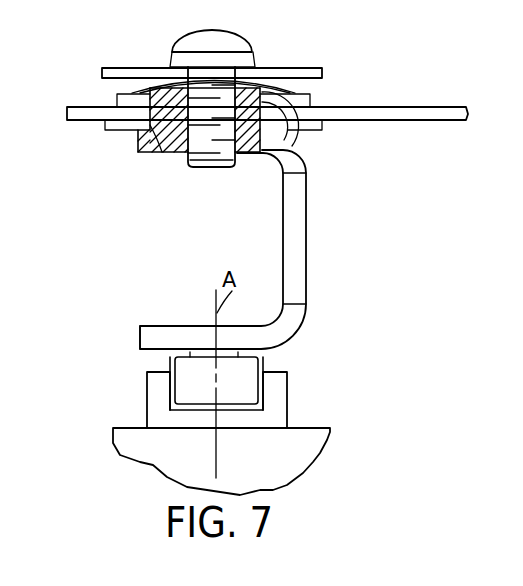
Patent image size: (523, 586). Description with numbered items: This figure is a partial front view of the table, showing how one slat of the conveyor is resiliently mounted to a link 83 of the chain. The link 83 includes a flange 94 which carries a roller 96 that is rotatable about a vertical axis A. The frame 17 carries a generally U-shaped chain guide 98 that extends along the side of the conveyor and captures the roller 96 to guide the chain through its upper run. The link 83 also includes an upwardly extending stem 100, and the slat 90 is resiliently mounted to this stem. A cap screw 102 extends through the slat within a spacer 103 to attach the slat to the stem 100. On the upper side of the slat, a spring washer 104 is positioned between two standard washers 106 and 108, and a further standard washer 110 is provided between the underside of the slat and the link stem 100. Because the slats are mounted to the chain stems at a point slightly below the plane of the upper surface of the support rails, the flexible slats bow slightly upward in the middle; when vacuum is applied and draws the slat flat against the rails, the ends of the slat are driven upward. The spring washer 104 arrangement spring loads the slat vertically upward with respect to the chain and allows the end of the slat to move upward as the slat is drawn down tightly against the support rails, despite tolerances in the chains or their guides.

The frame 17 is at (297, 445).
The link 83 is at (283, 187).
The plate 90 is at (405, 106).
The flange 94 is at (187, 326).
The roller 96 is at (170, 366).
The chain guide 98 is at (287, 412).
The stem 100 is at (307, 252).
The cap screw 102 is at (181, 37).
The spacer 103 is at (297, 135).
The spring washer 104 is at (295, 91).
The standard washer 106 is at (280, 67).
The standard washer 108 is at (116, 102).
The standard washer 110 is at (106, 131).